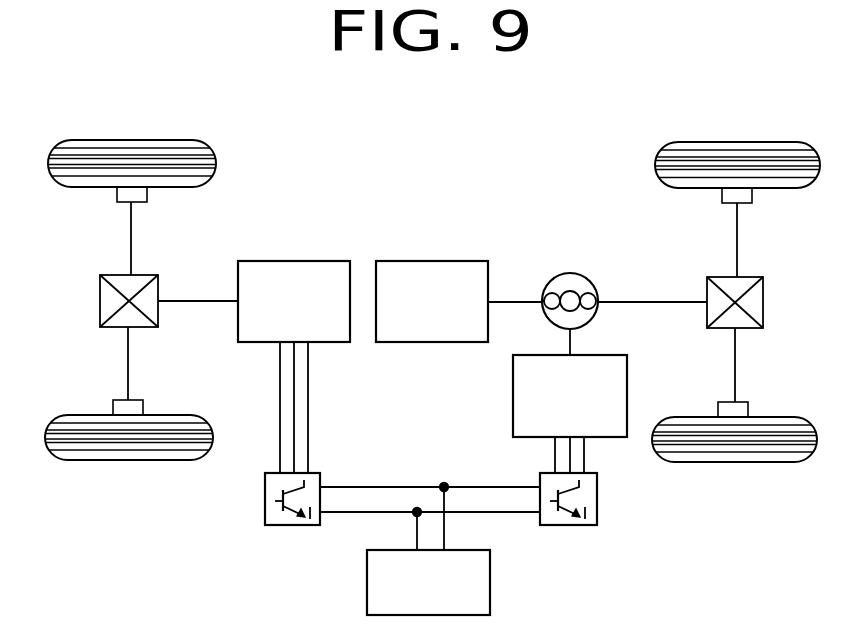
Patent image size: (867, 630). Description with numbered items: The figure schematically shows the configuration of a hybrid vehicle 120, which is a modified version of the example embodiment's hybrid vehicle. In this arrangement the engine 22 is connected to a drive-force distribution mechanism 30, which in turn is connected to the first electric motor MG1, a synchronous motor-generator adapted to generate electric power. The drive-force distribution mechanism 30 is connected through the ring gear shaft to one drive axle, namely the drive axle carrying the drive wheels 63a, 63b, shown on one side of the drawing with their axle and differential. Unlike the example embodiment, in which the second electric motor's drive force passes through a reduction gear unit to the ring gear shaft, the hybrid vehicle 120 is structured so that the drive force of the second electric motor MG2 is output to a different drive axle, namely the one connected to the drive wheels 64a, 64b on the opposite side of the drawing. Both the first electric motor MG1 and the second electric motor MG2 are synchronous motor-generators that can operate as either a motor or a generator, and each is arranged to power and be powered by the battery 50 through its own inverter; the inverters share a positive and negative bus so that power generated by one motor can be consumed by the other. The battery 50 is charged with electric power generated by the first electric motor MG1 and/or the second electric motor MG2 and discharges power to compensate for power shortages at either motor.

The hybrid vehicle 120 is at (445, 124).
The drive wheel 64a is at (131, 140).
The drive wheel 64b is at (129, 460).
The drive wheel 63a is at (738, 142).
The drive wheel 63b is at (734, 462).
The second electric motor MG2 is at (296, 261).
The engine 22 is at (434, 261).
The drive-force distribution mechanism 30 is at (570, 273).
The first electric motor MG1 is at (513, 392).
The battery 50 is at (490, 580).